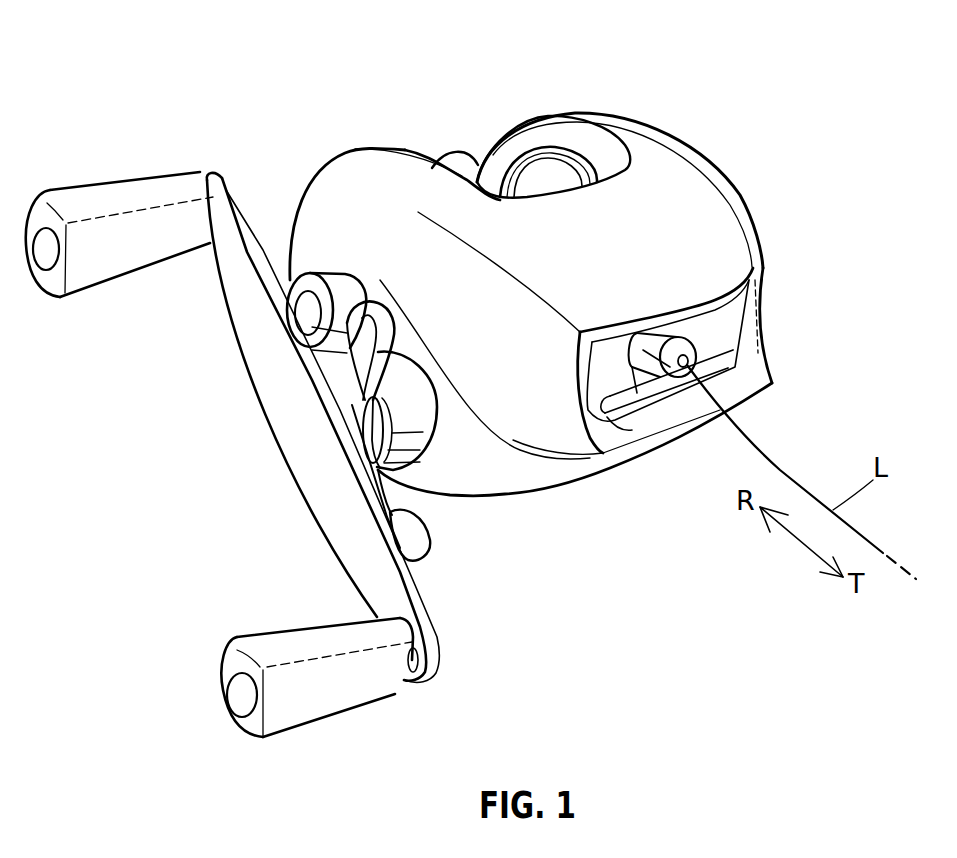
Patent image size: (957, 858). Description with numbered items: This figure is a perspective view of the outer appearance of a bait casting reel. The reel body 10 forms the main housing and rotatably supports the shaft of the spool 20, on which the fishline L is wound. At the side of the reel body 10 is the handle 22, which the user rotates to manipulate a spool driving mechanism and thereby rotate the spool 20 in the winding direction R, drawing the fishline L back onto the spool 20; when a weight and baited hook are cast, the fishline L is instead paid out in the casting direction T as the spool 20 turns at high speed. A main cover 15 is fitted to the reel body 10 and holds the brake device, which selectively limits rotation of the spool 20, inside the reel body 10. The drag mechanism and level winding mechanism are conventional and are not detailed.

The reel body 10 is at (502, 477).
The main cover 15 is at (726, 183).
The spool 20 is at (535, 178).
The handle 22 is at (110, 263).